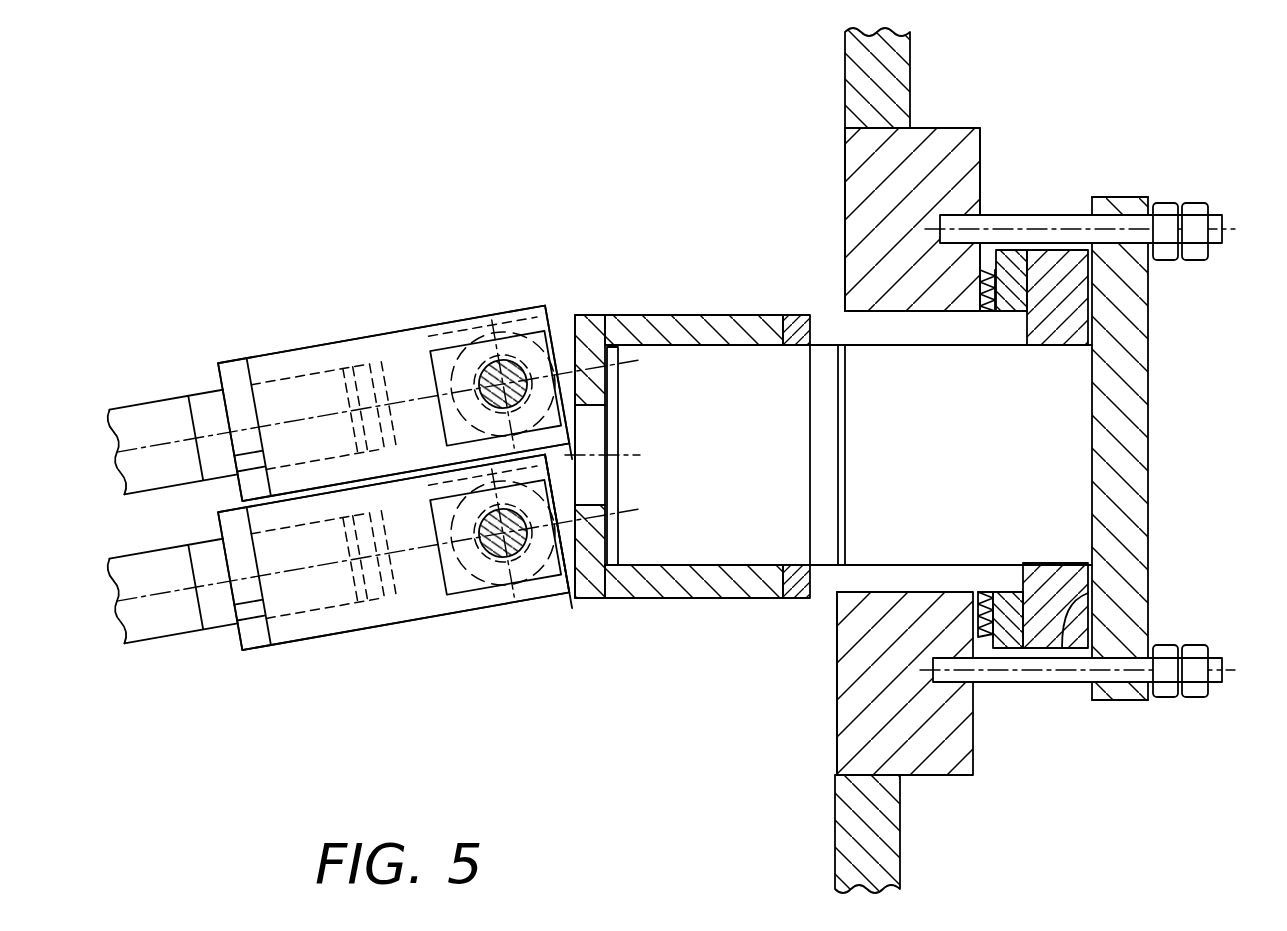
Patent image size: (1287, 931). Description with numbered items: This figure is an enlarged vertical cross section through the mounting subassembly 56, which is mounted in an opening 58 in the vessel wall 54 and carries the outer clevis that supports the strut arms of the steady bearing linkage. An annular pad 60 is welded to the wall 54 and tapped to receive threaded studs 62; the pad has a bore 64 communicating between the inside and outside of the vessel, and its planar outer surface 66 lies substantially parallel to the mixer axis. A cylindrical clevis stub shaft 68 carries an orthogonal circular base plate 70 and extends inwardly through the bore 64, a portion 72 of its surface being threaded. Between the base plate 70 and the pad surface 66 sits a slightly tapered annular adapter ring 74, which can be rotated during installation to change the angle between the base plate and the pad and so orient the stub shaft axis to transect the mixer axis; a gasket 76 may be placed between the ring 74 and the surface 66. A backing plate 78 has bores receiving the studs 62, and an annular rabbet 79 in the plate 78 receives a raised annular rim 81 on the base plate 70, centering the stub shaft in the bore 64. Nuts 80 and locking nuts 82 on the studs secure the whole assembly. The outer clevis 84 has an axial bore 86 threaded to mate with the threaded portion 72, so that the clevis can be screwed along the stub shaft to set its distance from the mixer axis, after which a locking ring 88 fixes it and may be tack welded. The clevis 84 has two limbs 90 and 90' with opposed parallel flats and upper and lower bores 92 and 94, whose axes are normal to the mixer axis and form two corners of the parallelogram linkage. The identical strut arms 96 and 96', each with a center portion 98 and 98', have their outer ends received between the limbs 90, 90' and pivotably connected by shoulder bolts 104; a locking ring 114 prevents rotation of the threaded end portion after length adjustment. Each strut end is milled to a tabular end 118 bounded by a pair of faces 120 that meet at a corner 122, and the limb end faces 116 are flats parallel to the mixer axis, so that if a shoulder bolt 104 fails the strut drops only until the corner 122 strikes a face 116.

The wall 54 is at (900, 50).
The mounting subassembly 56 is at (735, 176).
The opening 58 is at (845, 130).
The annular pad 60 is at (980, 142).
The threaded studs 62 is at (1060, 215).
The bore 64 is at (860, 587).
The planar outer surface 66 is at (985, 178).
The clevis stub shaft 68 is at (850, 325).
The circular base plate 70 is at (1115, 300).
The threaded portion 72 is at (665, 318).
The annular adapter ring 74 is at (1045, 345).
The gasket 76 is at (1000, 570).
The backing plate 78 is at (1145, 425).
The annular rabbet 79 is at (1145, 605).
The nuts 80 is at (1170, 208).
The raised annular rim 81 is at (1062, 625).
The locking nuts 82 is at (1210, 208).
The outer clevis 84 is at (598, 612).
The axial bore 86 is at (668, 592).
The locking ring 88 is at (800, 530).
The limb 90 is at (694, 296).
The limb 90' is at (694, 605).
The upper bore 92 is at (558, 322).
The lower bore 94 is at (552, 580).
The strut arm 96 is at (335, 412).
The strut arm 96' is at (335, 579).
The center portion 98 is at (344, 406).
The center portion 98' is at (343, 555).
The shoulder bolt 104 is at (498, 358).
The locking ring 114 is at (237, 368).
The end face 116 is at (445, 345).
The tabular end 118 is at (510, 305).
The faces 120 is at (432, 356).
The corner 122 is at (432, 340).